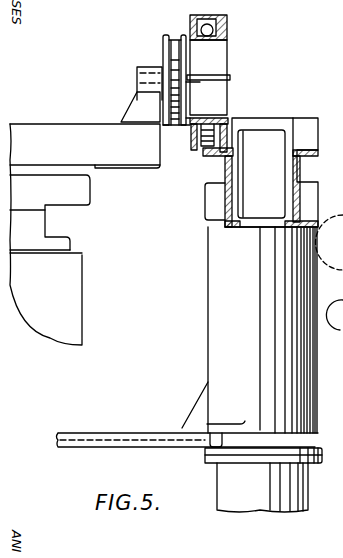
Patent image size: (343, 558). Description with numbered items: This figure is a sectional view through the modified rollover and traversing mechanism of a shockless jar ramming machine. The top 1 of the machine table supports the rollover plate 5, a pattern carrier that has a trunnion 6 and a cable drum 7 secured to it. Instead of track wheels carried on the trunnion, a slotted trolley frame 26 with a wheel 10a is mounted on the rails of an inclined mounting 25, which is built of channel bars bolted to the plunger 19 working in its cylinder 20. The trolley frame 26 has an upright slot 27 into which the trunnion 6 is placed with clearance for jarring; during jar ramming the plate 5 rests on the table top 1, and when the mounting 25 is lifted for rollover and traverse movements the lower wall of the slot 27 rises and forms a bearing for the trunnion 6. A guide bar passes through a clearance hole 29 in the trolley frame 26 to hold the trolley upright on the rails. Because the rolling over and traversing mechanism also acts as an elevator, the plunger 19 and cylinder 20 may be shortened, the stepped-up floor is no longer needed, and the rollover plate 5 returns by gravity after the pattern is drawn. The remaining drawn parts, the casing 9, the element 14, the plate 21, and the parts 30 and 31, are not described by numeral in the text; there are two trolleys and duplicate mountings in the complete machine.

The table top 1 is at (70, 166).
The rollover plate 5 is at (93, 124).
The trunnion 6 is at (230, 78).
The cable drum 7 is at (165, 52).
The cylindrical casing 9 is at (208, 332).
The wheel 10a is at (222, 126).
The pin 14 is at (183, 134).
The plunger 19 is at (247, 232).
The cylinder 20 is at (300, 441).
The plate 21 is at (152, 433).
The mounting 25 is at (228, 203).
The trolley frame 26 is at (225, 41).
The upright slot 27 is at (215, 62).
The clearance hole 29 is at (213, 30).
The wheel 30 is at (342, 222).
The spindle 31 is at (342, 302).